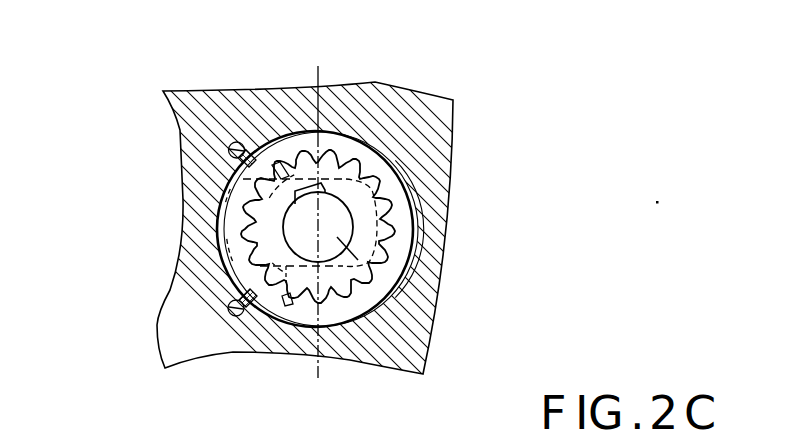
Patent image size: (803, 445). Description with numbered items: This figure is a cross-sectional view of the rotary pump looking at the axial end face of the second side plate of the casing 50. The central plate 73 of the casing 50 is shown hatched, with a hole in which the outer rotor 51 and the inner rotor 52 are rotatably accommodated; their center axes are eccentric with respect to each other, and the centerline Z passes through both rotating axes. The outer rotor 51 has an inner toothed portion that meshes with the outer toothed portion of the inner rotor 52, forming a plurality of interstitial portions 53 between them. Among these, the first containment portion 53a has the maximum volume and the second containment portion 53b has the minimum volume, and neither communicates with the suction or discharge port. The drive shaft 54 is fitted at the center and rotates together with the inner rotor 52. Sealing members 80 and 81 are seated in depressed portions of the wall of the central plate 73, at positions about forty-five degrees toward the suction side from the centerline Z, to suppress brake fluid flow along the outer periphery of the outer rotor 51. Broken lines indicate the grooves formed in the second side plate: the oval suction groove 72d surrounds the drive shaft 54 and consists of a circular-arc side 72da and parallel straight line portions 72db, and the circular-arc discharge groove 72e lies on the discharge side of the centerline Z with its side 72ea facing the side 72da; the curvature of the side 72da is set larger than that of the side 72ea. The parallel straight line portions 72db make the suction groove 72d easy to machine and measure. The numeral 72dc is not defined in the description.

The central plate 73 is at (436, 125).
The casing 50 is at (436, 191).
The outer rotor 51 is at (233, 203).
The discharge groove 72e is at (430, 160).
The side of discharge groove 72ea is at (374, 184).
The inner rotor 52 is at (251, 170).
The suction groove 72d is at (276, 167).
The straight line portions 72db is at (287, 175).
The side of suction groove 72da is at (377, 213).
The gear portion 72dc is at (235, 268).
The interstitial portions 53 is at (385, 268).
The first containment portion 53a is at (323, 300).
The second containment portion 53b is at (298, 132).
The drive shaft 54 is at (358, 260).
The centerline Z is at (319, 212).
The sealing member 80 is at (233, 316).
The sealing member 81 is at (232, 142).